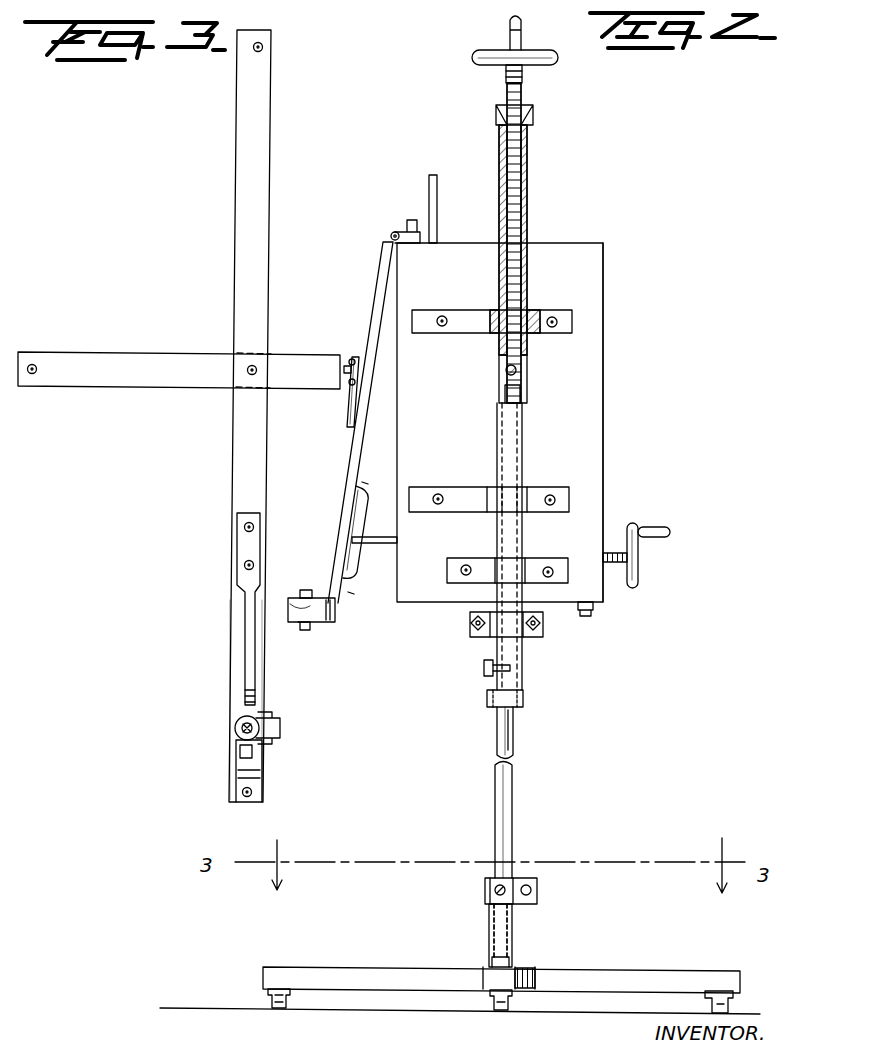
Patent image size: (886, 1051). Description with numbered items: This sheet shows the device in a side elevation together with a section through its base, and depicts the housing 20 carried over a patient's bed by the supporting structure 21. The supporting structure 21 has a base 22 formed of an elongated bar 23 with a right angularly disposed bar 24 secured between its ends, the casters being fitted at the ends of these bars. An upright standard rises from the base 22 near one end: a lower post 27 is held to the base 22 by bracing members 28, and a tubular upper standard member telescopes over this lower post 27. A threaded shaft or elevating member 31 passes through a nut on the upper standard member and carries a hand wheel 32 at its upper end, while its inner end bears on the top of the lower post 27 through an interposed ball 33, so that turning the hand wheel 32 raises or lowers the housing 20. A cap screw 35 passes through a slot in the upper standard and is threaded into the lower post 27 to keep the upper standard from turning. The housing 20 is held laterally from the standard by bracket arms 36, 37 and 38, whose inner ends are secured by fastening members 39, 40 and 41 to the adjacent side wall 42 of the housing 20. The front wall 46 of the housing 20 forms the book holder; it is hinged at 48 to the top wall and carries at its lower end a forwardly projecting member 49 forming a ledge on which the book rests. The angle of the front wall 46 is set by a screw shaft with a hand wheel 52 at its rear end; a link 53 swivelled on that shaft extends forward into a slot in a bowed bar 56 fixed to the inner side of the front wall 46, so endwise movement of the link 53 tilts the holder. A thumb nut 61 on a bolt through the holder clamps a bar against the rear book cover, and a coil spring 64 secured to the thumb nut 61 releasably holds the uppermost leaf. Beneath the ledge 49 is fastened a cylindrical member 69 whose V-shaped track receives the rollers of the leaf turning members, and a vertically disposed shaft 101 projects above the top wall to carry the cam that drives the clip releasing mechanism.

In FIG. 2, the housing 20 is at (616, 392).
In FIG. 2, the supporting structure 21 is at (527, 721).
In FIG. 3, the base 22 is at (276, 696).
In FIG. 2, the base 22 is at (432, 962).
In FIG. 3, the elongated bar 23 is at (243, 438).
In FIG. 2, the elongated bar 23 is at (490, 975).
In FIG. 3, the right angularly disposed bar 24 is at (125, 370).
In FIG. 2, the right angularly disposed bar 24 is at (352, 975).
In FIG. 3, the lower post 27 is at (233, 728).
In FIG. 2, the lower post 27 is at (513, 733).
In FIG. 3, the bracing members 28 is at (247, 640).
In FIG. 2, the bracing members 28 is at (512, 933).
In FIG. 2, the threaded shaft 31 is at (505, 78).
In FIG. 2, the hand wheel 32 is at (488, 52).
In FIG. 2, the ball 33 is at (516, 371).
In FIG. 2, the cap screw 35 is at (487, 668).
In FIG. 2, the bracket arm 36 is at (536, 312).
In FIG. 2, the bracket arm 37 is at (528, 490).
In FIG. 2, the bracket arm 38 is at (532, 580).
In FIG. 2, the fastening member 39 is at (560, 316).
In FIG. 2, the fastening member 40 is at (441, 495).
In FIG. 2, the fastening member 41 is at (549, 568).
In FIG. 2, the side wall 42 is at (590, 442).
In FIG. 2, the front wall 46 is at (350, 453).
In FIG. 2, the hinge 48 is at (391, 236).
In FIG. 2, the forwardly projecting member 49 is at (312, 594).
In FIG. 2, the hand wheel 52 is at (640, 568).
In FIG. 2, the link 53 is at (383, 550).
In FIG. 2, the bowed bar 56 is at (366, 506).
In FIG. 2, the thumb nut 61 is at (358, 360).
In FIG. 2, the coil spring 64 is at (350, 416).
In FIG. 2, the cylindrical member 69 is at (336, 636).
In FIG. 2, the vertically disposed shaft 101 is at (430, 178).